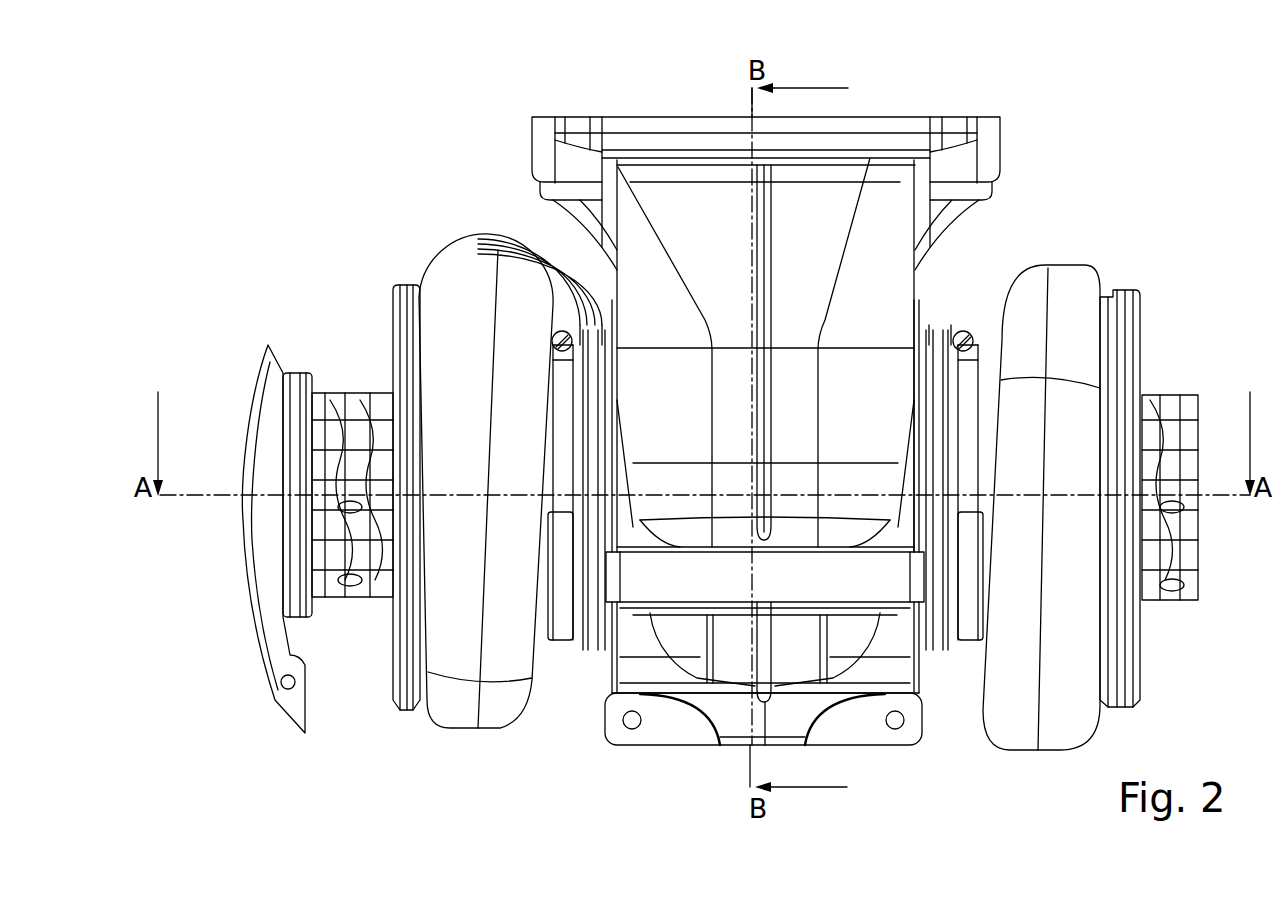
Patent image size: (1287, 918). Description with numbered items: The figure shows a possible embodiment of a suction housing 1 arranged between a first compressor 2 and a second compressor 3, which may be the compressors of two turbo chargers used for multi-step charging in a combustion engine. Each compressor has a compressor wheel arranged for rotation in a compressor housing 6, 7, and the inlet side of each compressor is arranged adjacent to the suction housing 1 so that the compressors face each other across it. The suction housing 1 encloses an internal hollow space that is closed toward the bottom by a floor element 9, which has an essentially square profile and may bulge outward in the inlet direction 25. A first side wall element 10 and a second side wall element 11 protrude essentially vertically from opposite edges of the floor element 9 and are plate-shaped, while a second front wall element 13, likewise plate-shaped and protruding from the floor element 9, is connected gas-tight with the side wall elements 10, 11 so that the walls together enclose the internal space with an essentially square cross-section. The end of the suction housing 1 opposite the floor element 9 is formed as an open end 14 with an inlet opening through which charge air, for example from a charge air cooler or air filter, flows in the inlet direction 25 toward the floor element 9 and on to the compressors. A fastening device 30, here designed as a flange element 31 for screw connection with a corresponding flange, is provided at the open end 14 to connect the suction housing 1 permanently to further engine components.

The suction housing 1 is at (893, 268).
The first compressor 2 is at (1087, 285).
The second compressor 3 is at (479, 262).
The compressor housing 6 is at (1060, 273).
The compressor housing 7 is at (447, 278).
The floor element 9 is at (885, 685).
The first side wall element 10 is at (916, 286).
The second side wall element 11 is at (617, 280).
The second front wall element 13 is at (835, 210).
The open end 14 is at (668, 117).
The inlet direction 25 is at (717, 100).
The fastening device 30 is at (647, 582).
The flange element 31 is at (550, 143).